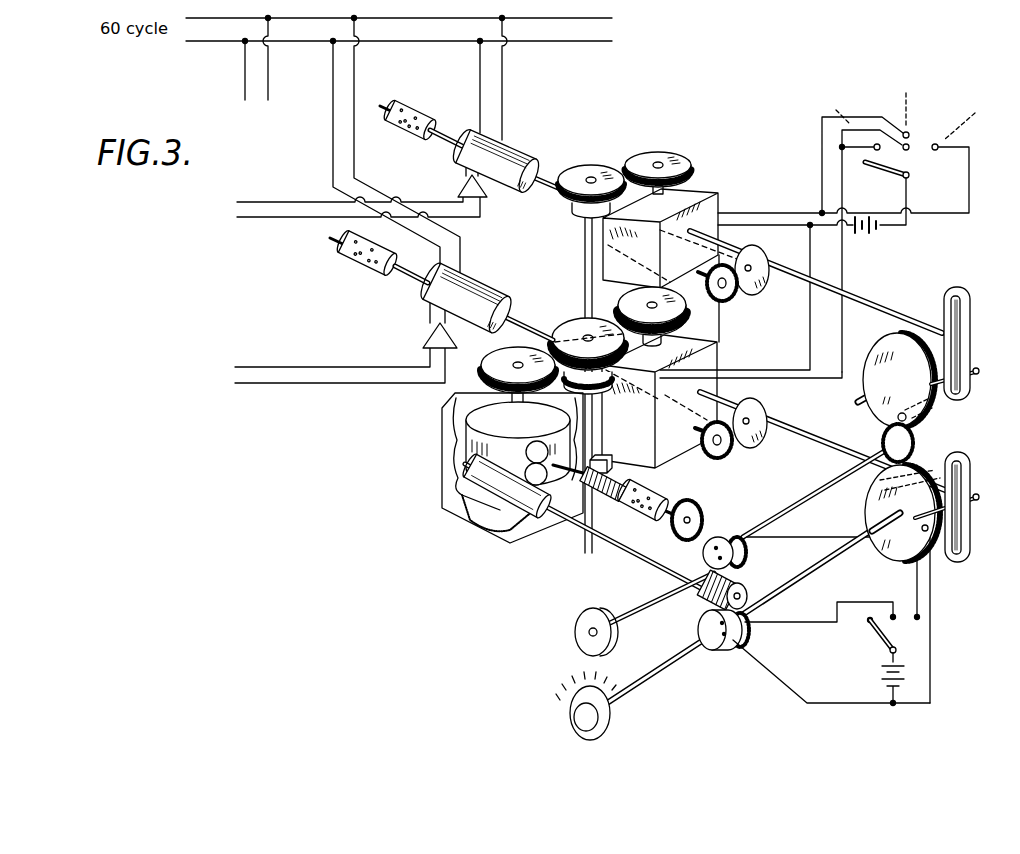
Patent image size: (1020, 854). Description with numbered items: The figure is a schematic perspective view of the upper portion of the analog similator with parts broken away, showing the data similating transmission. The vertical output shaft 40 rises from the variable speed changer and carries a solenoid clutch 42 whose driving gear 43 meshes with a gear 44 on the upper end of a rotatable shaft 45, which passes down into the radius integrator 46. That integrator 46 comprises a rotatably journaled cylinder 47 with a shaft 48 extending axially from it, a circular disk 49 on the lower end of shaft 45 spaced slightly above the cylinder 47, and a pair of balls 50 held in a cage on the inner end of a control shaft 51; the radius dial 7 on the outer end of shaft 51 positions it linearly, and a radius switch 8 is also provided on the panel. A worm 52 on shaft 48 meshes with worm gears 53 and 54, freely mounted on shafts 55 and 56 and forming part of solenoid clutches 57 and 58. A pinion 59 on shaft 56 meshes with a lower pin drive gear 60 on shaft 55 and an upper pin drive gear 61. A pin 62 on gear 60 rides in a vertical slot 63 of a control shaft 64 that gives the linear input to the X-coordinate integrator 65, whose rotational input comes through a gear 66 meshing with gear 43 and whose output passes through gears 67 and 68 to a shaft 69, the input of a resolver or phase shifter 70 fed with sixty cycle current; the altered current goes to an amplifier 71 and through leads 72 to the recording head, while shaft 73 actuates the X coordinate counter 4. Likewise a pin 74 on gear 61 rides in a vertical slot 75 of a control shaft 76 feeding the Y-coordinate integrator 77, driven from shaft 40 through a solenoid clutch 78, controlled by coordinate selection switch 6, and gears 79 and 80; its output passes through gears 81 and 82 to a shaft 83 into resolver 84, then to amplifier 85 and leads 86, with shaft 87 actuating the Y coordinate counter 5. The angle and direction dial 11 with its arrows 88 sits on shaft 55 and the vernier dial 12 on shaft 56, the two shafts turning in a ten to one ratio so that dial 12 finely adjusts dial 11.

The X or longitudinal coordinate counter 4 is at (345, 256).
The Y or cross coordinate counter 5 is at (406, 108).
The coordinate selection switch 6 is at (915, 182).
The radius dial 7 is at (680, 505).
The radius switch 8 is at (877, 650).
The angle and direction dial 11 is at (568, 710).
The vernier dial 12 is at (573, 628).
The output shaft 40 is at (584, 258).
The solenoid clutch 42 is at (606, 386).
The driving gear 43 is at (575, 325).
The gear 44 is at (500, 356).
The rotatable shaft 45 is at (500, 395).
The radius integrator 46 is at (443, 455).
The cylinder 47 is at (505, 520).
The shaft 48 is at (635, 548).
The circular disk 49 is at (478, 420).
The balls 50 is at (468, 492).
The control shaft 51 is at (545, 486).
The worm 52 is at (703, 598).
The worm gear 53 is at (750, 634).
The worm gear 54 is at (748, 556).
The shaft 55 is at (853, 548).
The shaft 56 is at (809, 501).
The solenoid clutch 57 is at (716, 651).
The solenoid clutch 58 is at (703, 528).
The pinion 59 is at (883, 440).
The lower pin drive gear 60 is at (905, 561).
The upper pin drive gear 61 is at (934, 410).
The pin 62 is at (963, 513).
The vertical slot 63 is at (950, 562).
The control shaft 64 is at (812, 443).
The X-coordinate integrator 65 is at (719, 350).
The gear 66 is at (688, 312).
The gear 67 is at (720, 458).
The gear 68 is at (766, 408).
The shaft 69 is at (528, 318).
The resolver or phase shifter 70 is at (483, 288).
The amplifier 71 is at (422, 337).
The leads 72 is at (233, 378).
The shaft 73 is at (405, 272).
The pin 74 is at (977, 376).
The vertical slot 75 is at (962, 287).
The control shaft 76 is at (862, 303).
The Y-coordinate integrator 77 is at (718, 191).
The solenoid clutch 78 is at (578, 218).
The clutch gear 79 is at (595, 166).
The gear 80 is at (672, 155).
The gear 81 is at (731, 292).
The gear 82 is at (762, 252).
The shaft 83 is at (553, 175).
The resolver or phase shifter 84 is at (508, 136).
The amplifier 85 is at (458, 190).
The leads 86 is at (235, 206).
The shaft 87 is at (446, 132).
The arrows 88 is at (581, 684).